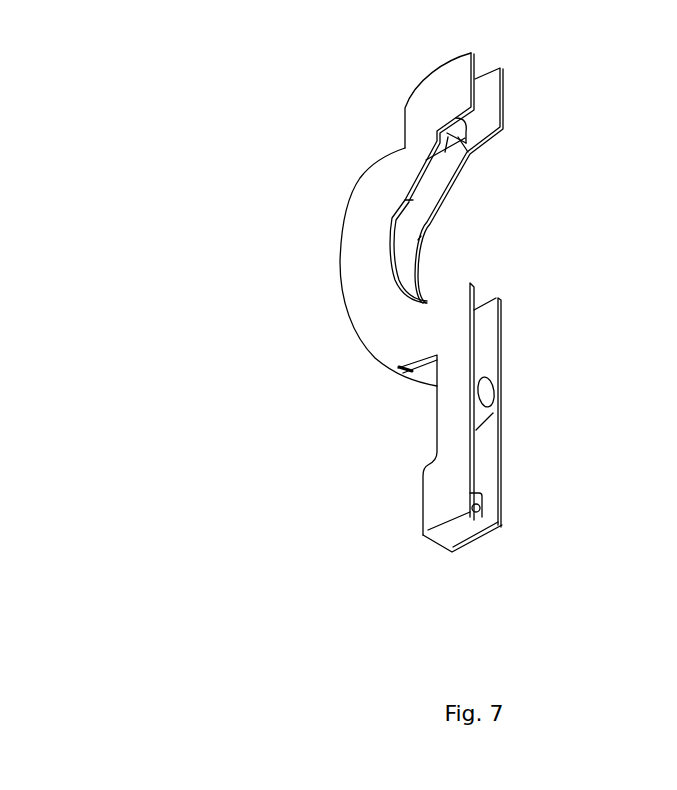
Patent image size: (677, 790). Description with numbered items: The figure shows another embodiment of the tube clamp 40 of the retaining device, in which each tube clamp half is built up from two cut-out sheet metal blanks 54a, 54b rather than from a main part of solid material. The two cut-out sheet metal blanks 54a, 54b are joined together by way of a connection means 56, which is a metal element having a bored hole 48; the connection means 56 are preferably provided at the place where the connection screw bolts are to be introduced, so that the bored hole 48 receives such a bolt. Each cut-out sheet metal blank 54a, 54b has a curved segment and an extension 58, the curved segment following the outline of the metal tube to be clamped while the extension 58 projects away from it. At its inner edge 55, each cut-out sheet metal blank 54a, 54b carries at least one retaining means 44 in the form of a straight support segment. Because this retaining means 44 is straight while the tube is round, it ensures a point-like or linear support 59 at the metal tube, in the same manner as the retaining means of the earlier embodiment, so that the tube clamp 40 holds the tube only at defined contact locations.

The tube clamp 40 is at (387, 548).
The retaining means 44 is at (405, 200).
The bored hole 48 is at (483, 392).
The cut-out sheet metal blank 54a is at (355, 274).
The cut-out sheet metal blank 54b is at (422, 385).
The inner edge 55 is at (420, 237).
The connection means 56 is at (478, 158).
The extension 58 is at (453, 415).
The point-like or linear support 59 is at (422, 170).